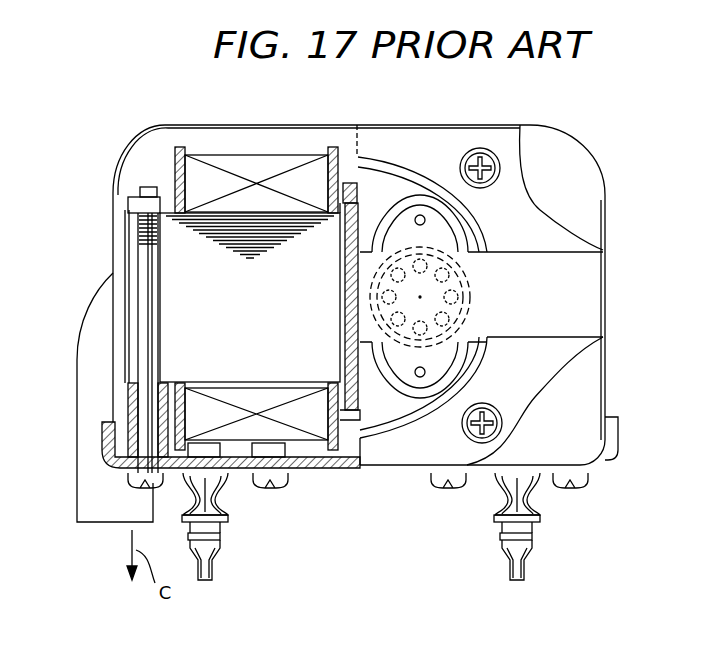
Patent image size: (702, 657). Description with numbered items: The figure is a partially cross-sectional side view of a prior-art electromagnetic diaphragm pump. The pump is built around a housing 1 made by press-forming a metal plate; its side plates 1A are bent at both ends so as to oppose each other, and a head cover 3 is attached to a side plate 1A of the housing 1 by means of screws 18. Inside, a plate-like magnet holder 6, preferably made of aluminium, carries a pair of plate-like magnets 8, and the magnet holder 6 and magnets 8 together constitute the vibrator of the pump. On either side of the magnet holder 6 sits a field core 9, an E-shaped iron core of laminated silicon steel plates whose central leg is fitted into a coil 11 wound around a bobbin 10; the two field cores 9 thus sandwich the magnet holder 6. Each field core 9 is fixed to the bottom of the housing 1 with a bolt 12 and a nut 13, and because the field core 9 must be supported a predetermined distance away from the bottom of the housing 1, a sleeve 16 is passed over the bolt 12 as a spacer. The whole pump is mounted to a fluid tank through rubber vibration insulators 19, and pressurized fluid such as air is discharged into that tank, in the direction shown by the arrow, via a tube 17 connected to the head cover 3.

The housing 1 is at (206, 124).
The side plate 1A is at (163, 138).
The head cover 3 is at (422, 145).
The magnet holder 6 is at (353, 203).
The magnet 8 is at (358, 355).
The field core 9 is at (177, 260).
The bobbin 10 is at (330, 148).
The coil 11 is at (268, 167).
The bolt 12 is at (132, 488).
The nut 13 is at (128, 203).
The sleeve 16 is at (130, 411).
The tube 17 is at (86, 478).
The screw 18 is at (490, 155).
The rubber vibration insulator 19 is at (207, 557).